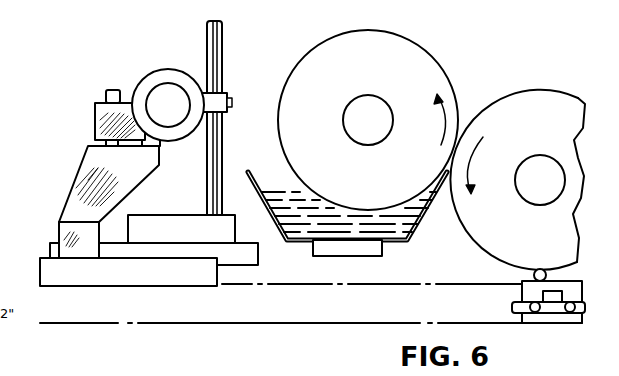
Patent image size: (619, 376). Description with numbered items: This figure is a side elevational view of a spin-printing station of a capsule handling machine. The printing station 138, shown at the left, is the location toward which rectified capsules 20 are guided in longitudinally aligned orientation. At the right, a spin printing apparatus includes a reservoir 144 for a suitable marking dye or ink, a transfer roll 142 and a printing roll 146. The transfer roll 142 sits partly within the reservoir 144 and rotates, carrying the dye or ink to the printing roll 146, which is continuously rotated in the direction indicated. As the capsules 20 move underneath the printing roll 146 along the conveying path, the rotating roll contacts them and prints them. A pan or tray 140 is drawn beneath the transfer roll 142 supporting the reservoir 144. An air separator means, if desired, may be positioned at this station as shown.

The printing station 138 is at (156, 69).
The tray 140 is at (298, 244).
The transfer roll 142 is at (410, 53).
The reservoir 144 is at (403, 222).
The printing roll 146 is at (519, 101).
The capsules 20 is at (549, 268).